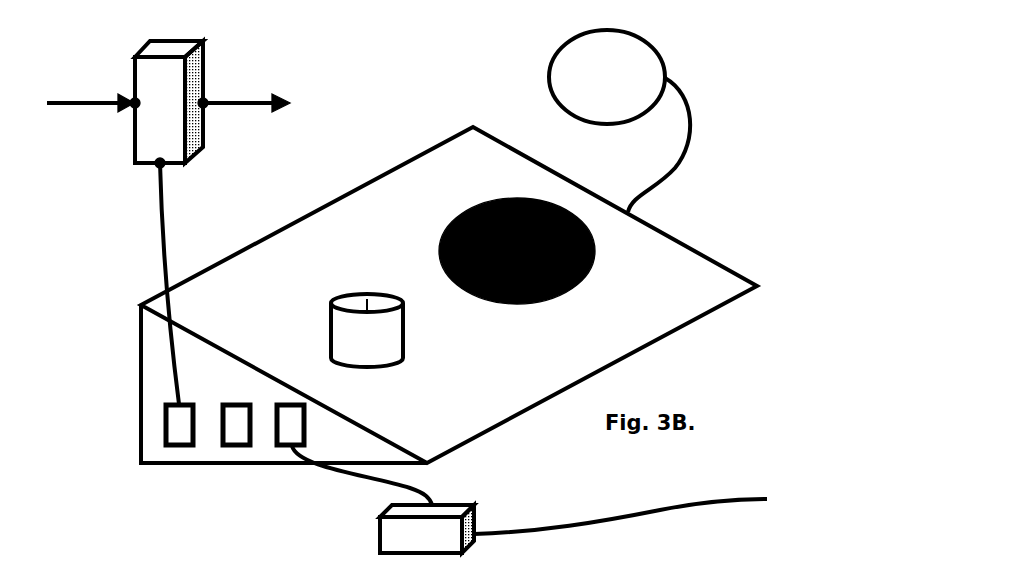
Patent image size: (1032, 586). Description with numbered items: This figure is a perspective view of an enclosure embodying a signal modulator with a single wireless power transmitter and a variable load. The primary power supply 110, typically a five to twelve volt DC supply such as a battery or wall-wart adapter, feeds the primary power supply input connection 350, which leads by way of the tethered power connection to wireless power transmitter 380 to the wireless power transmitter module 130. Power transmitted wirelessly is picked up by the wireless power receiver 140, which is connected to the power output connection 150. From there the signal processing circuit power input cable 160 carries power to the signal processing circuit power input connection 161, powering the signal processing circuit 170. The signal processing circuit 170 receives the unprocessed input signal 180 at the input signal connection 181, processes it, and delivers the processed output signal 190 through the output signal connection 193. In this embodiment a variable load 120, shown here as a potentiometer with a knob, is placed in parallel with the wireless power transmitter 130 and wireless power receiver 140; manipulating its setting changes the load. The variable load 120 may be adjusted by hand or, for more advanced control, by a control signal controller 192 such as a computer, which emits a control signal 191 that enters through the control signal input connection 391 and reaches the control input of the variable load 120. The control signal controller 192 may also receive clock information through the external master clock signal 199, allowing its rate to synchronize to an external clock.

The primary power supply 110 is at (236, 446).
The variable load 120 is at (328, 330).
The wireless power transmitter module 130 is at (547, 77).
The wireless power receiver 140 is at (463, 290).
The power output connection 150 is at (163, 425).
The signal processing circuit power input cable 160 is at (172, 238).
The signal processing circuit power input connection 161 is at (157, 166).
The signal processing circuit 170 is at (170, 48).
The unprocessed input signal 180 is at (83, 94).
The input signal connection 181 is at (130, 101).
The processed output signal 190 is at (248, 93).
The control signal 191 is at (343, 475).
The control signal controller 192 is at (478, 521).
The output signal connection 193 is at (208, 101).
The external master clock signal 199 is at (630, 513).
The primary power supply input connection 350 is at (236, 402).
The tethered power connection to wireless power transmitter 380 is at (684, 157).
The control signal input connection 391 is at (306, 424).